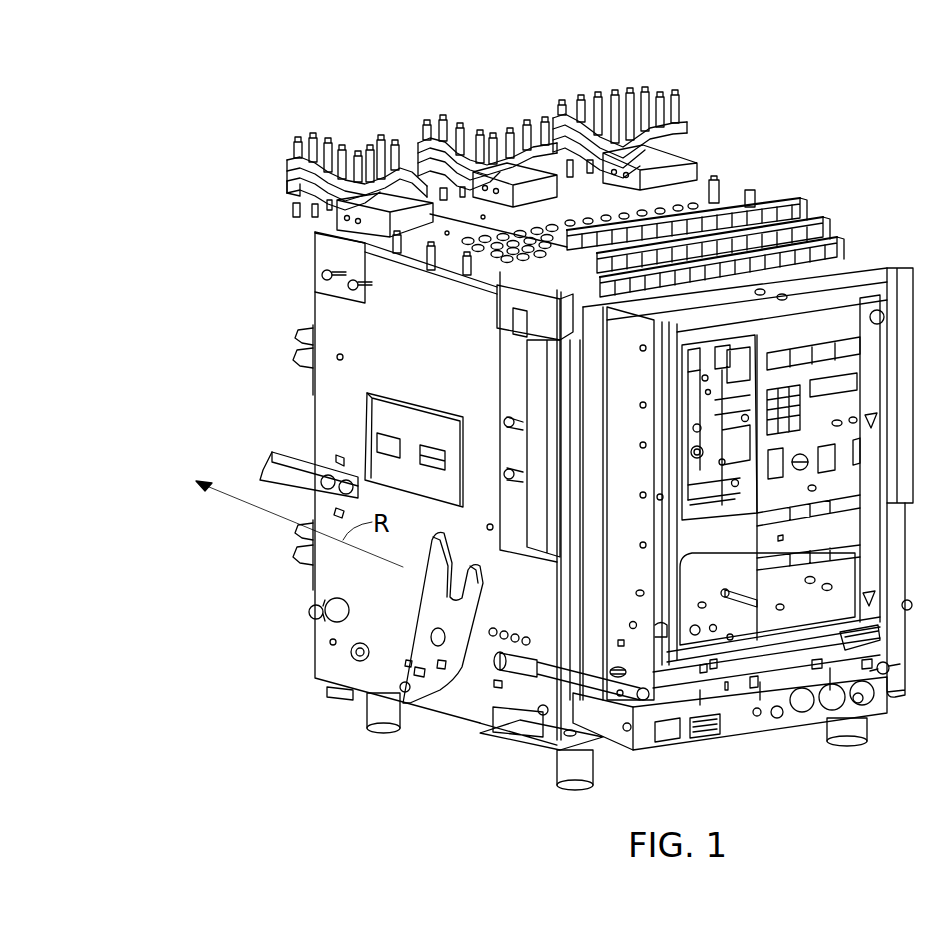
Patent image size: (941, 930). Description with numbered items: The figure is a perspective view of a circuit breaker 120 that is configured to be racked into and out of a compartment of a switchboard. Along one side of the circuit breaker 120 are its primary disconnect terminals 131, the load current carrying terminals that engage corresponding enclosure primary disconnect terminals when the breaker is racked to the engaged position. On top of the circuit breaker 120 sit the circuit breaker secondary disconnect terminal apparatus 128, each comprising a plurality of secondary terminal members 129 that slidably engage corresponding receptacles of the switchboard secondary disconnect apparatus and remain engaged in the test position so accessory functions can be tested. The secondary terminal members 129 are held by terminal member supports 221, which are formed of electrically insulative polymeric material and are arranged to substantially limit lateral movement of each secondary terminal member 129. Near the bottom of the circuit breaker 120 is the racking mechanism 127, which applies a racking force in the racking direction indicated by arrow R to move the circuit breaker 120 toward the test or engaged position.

The circuit breaker 120 is at (158, 78).
The racking mechanism 127 is at (412, 643).
The circuit breaker secondary disconnect terminal apparatus 128 is at (323, 120).
The circuit breaker secondary terminal members 129 is at (295, 145).
The circuit breaker primary disconnect terminals 131 is at (290, 352).
The terminal member supports 221 is at (283, 170).